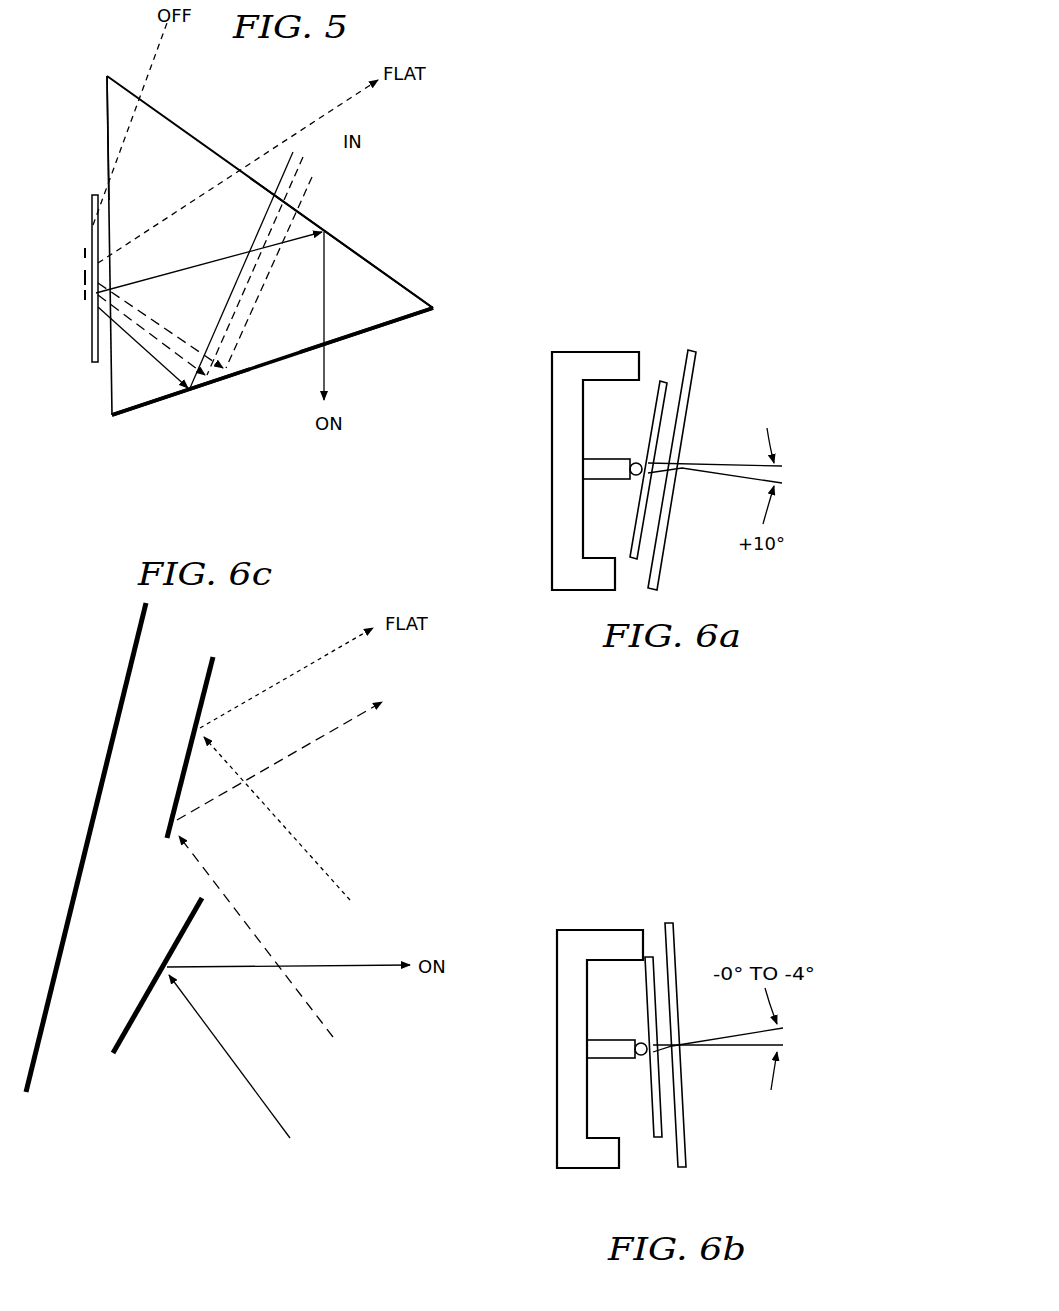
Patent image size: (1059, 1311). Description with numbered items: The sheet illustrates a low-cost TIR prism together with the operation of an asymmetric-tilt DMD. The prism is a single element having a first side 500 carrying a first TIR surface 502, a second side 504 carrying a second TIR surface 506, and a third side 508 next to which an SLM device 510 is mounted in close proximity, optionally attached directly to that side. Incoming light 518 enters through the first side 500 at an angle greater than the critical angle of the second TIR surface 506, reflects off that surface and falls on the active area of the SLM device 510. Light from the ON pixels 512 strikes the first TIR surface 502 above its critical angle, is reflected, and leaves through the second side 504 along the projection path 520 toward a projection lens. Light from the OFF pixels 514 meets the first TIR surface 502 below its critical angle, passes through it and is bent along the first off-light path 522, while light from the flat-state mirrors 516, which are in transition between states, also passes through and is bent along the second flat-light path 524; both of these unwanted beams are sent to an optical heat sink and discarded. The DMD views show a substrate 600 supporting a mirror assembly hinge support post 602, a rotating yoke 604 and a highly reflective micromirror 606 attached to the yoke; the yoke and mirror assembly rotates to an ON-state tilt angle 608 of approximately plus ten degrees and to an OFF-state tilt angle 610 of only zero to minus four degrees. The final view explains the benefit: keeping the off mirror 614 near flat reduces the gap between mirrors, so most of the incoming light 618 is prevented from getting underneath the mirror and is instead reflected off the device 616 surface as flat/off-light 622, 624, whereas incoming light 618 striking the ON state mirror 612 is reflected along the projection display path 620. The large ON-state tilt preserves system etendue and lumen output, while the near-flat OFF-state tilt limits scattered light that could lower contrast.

In FIG. 5, the first side 500 is at (415, 300).
In FIG. 5, the first TIR surface 502 is at (330, 233).
In FIG. 5, the second side 504 is at (410, 318).
In FIG. 5, the second TIR surface 506 is at (170, 400).
In FIG. 5, the third side 508 is at (107, 105).
In FIG. 5, the SLM device 510 is at (92, 352).
In FIG. 5, the ON pixels 512 is at (85, 296).
In FIG. 5, the OFF pixels 514 is at (84, 254).
In FIG. 5, the flat-state mirrors 516 is at (85, 278).
In FIG. 5, the incoming light 518 is at (303, 165).
In FIG. 5, the projection path 520 is at (323, 381).
In FIG. 5, the first off-light path 522 is at (148, 62).
In FIG. 5, the second flat-light path 524 is at (302, 119).
In FIG. 6a, the substrate 600 is at (552, 418).
In FIG. 6b, the substrate 600 is at (557, 997).
In FIG. 6a, the mirror assembly hinge support post 602 is at (605, 458).
In FIG. 6b, the mirror assembly hinge support post 602 is at (608, 1038).
In FIG. 6a, the rotating yoke 604 is at (663, 382).
In FIG. 6b, the rotating yoke 604 is at (657, 1138).
In FIG. 6a, the highly reflective micromirror 606 is at (695, 363).
In FIG. 6a, the ON-state tilt angle 608 is at (774, 433).
In FIG. 6b, the ON-state tilt angle 608 is at (682, 1168).
In FIG. 6b, the OFF-state tilt angle 610 is at (781, 1008).
In FIG. 6c, the ON state mirror 612 is at (147, 994).
In FIG. 6c, the off mirror 614 is at (202, 683).
In FIG. 6c, the device surface 616 is at (87, 842).
In FIG. 6c, the incoming light 618 is at (325, 870).
In FIG. 6c, the projection display path 620 is at (357, 965).
In FIG. 6c, the flat/off-light 622 is at (322, 657).
In FIG. 6c, the flat/off-light 624 is at (320, 737).